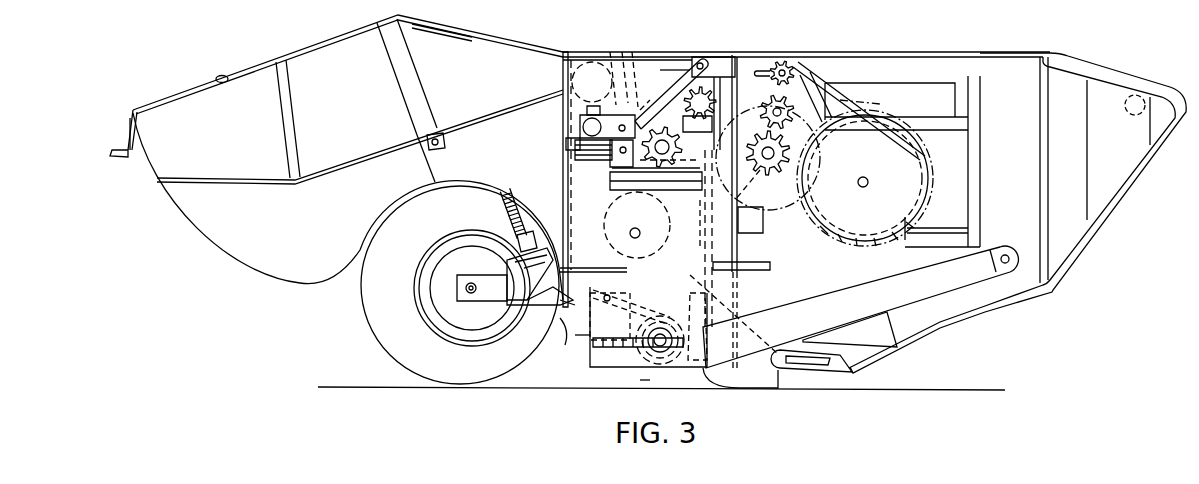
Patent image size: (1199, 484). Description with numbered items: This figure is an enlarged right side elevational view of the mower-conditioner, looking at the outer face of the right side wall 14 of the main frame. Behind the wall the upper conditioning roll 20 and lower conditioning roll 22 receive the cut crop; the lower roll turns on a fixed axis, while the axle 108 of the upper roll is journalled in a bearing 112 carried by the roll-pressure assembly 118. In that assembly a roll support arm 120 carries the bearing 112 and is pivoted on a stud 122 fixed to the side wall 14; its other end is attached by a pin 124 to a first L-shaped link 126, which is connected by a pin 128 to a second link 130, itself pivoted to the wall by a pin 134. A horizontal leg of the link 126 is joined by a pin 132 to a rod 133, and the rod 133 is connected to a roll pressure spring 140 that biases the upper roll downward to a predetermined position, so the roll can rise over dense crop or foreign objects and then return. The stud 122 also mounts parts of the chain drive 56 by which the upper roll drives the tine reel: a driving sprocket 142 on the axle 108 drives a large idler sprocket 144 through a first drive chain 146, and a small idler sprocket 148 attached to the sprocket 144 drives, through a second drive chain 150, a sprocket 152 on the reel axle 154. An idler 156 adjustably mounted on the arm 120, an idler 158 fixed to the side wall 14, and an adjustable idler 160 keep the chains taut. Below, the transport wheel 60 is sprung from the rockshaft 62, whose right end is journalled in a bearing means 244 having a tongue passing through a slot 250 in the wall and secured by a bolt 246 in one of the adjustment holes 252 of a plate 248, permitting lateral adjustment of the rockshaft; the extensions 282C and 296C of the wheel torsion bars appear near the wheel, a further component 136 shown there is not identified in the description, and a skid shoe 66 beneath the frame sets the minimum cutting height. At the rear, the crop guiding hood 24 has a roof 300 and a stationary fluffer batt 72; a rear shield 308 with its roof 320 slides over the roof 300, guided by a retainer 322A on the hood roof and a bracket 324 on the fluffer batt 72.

The side wall 14 is at (1021, 167).
The upper conditioning roll 20 is at (630, 79).
The lower conditioning roll 22 is at (668, 253).
The crop guiding hood 24 is at (538, 38).
The chain drive 56 is at (878, 104).
The wheel 60 is at (366, 320).
The rockshaft 62 is at (640, 378).
The skid shoe 66 is at (778, 374).
The fluffer batt 72 is at (120, 112).
The axle 108 is at (663, 138).
The bearing 112 is at (668, 192).
The roll-pressure assembly 118 is at (681, 60).
The roll support arm 120 is at (755, 192).
The stud 122 is at (762, 154).
The pin 124 is at (622, 157).
The first L-shaped link 126 is at (566, 142).
The pin 128 is at (654, 89).
The second link 130 is at (675, 74).
The pin 132 is at (582, 116).
The rod 133 is at (575, 158).
The pin 134 is at (703, 62).
The threaded rod 136 is at (550, 243).
The roll pressure spring 140 is at (637, 225).
The driving sprocket 142 is at (674, 164).
The large idler sprocket 144 is at (763, 225).
The first drive chain 146 is at (691, 225).
The small idler sprocket 148 is at (800, 161).
The second drive chain 150 is at (843, 90).
The sprocket 152 is at (890, 220).
The axle 154 is at (869, 183).
The idler 156 is at (760, 114).
The idler 158 is at (783, 136).
The idler 160 is at (790, 66).
The bearing means 244 is at (672, 352).
The bolt 246 is at (664, 352).
The plate 248 is at (572, 345).
The slot 250 is at (618, 350).
The adjustment holes 252 is at (648, 327).
The extension of torsion bar 282C is at (572, 320).
The extension of torsion bar 296C is at (637, 284).
The roof 300 is at (500, 30).
The rear shield 308 is at (264, 150).
The roof 320 is at (338, 30).
The retainer 322A is at (224, 73).
The bracket 324 is at (120, 145).